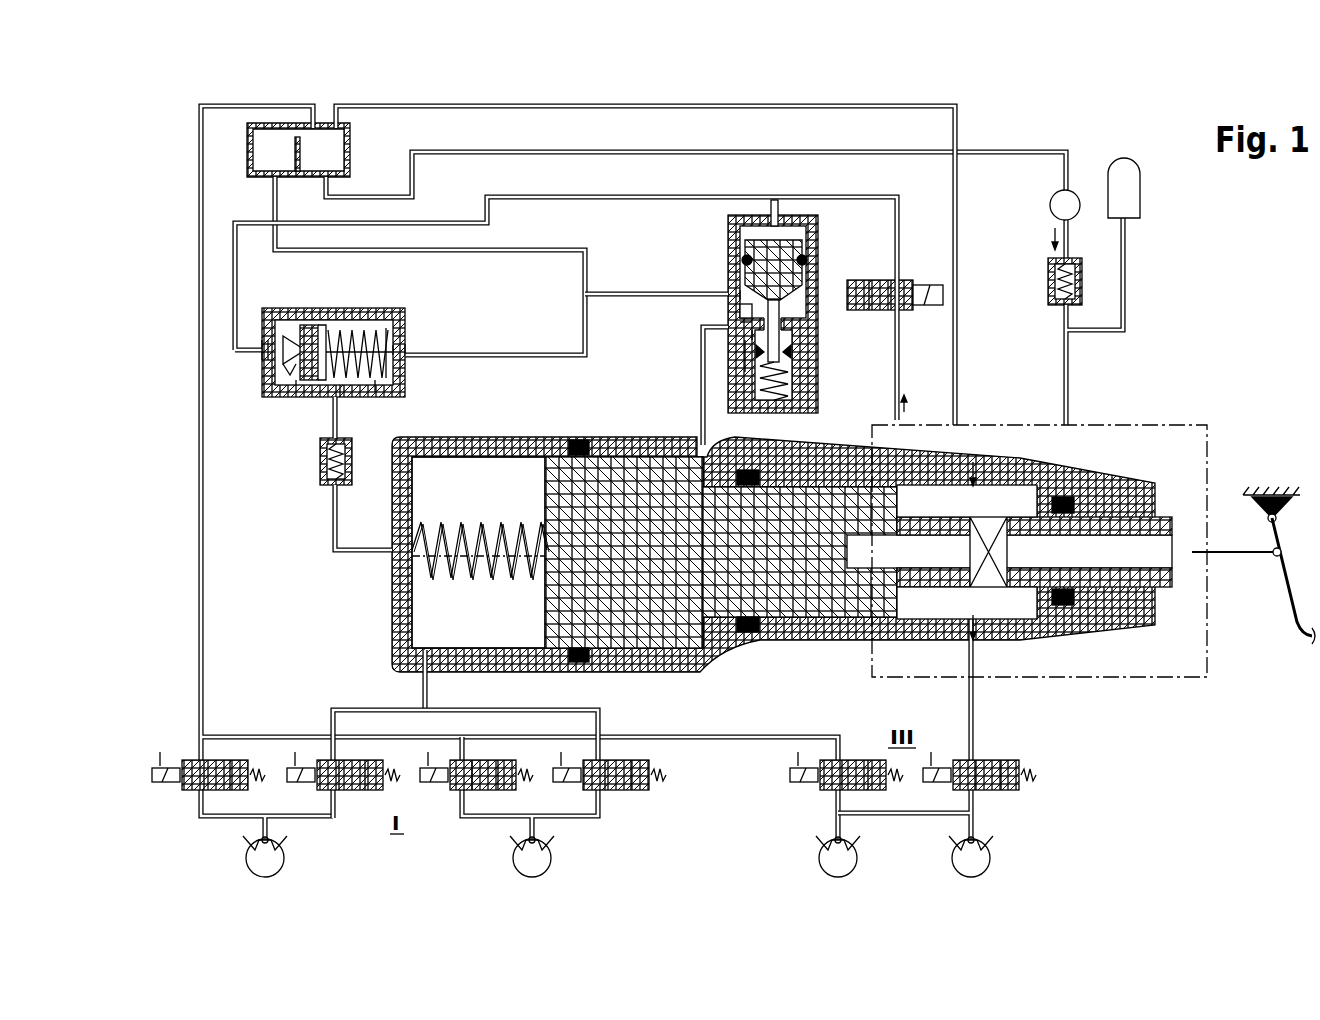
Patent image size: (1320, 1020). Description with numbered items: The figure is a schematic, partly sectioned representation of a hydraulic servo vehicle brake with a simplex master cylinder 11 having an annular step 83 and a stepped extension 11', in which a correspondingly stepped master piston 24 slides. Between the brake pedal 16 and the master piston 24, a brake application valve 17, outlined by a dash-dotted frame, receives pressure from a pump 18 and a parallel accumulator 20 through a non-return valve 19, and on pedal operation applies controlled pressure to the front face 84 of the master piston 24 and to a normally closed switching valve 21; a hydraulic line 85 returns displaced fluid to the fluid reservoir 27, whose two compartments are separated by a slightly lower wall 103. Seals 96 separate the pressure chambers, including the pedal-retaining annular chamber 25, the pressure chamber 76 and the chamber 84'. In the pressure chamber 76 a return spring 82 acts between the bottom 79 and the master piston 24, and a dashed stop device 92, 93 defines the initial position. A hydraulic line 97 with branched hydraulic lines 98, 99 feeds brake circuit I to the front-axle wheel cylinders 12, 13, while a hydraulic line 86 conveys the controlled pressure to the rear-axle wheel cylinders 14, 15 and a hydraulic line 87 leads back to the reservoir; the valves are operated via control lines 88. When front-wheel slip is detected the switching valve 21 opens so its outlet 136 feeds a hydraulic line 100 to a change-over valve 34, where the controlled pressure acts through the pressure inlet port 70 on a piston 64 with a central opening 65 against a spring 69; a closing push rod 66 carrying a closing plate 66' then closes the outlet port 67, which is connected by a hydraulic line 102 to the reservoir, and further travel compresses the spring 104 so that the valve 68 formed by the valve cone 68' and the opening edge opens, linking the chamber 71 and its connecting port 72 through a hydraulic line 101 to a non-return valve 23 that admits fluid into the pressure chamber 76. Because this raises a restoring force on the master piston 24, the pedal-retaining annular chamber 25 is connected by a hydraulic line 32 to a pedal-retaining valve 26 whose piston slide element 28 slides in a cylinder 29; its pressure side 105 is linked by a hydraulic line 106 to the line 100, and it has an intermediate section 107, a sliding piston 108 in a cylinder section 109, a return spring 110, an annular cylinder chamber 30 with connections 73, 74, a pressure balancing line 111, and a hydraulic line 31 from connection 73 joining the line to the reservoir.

The master cylinder 11 is at (773, 532).
The stepped extension of the master cylinder 11' is at (749, 503).
The front-axle wheel cylinder 12 is at (250, 842).
The front-axle wheel cylinder 13 is at (516, 842).
The rear-axle wheel cylinder 14 is at (822, 842).
The rear-axle wheel cylinder 15 is at (955, 842).
The brake pedal 16 is at (1285, 600).
The brake application valve 17 is at (1146, 430).
The pump 18 is at (1050, 205).
The non-return valve 19 is at (1048, 285).
The accumulator 20 is at (1138, 192).
The switching valve 21 is at (880, 281).
The non-return valve 23 is at (320, 470).
The master piston 24 is at (656, 632).
The pedal-retaining annular chamber 25 is at (700, 640).
The pedal-retaining valve 26 is at (728, 232).
The fluid reservoir 27 is at (247, 150).
The piston slide element 28 is at (744, 252).
The cylinder 29 is at (744, 270).
The annular cylinder chamber 30 is at (750, 312).
The hydraulic line 31 is at (604, 292).
The hydraulic line 32 is at (702, 408).
The change-over valve 34 is at (408, 312).
The piston 64 is at (308, 330).
The central opening 65 is at (324, 328).
The closing push rod 66 is at (359, 327).
The closing plate 66' is at (398, 327).
The outlet port 67 is at (406, 350).
The valve 68 is at (257, 362).
The valve cone 68' is at (258, 389).
The spring 69 is at (380, 388).
The pressure inlet port 70 is at (264, 348).
The chamber 71 is at (346, 388).
The connecting port 72 is at (330, 400).
The connection 73 is at (738, 296).
The connection 74 is at (742, 345).
The pressure chamber 76 is at (495, 458).
The bottom 79 is at (400, 602).
The return spring 82 is at (482, 578).
The annular step 83 is at (724, 652).
The front face 84 is at (1009, 508).
The pressure chamber 84' is at (981, 547).
The hydraulic line 85 is at (958, 265).
The hydraulic line 86 is at (976, 730).
The hydraulic line 87 is at (712, 740).
The control lines 88 is at (170, 785).
The stop device 92 is at (450, 536).
The stop device 93 is at (538, 536).
The seals 96 is at (580, 662).
The hydraulic line 97 is at (420, 700).
The branched hydraulic line 98 is at (490, 710).
The branched hydraulic line 99 is at (362, 710).
The hydraulic line 100 is at (454, 224).
The hydraulic line 101 is at (333, 522).
The hydraulic line 102 is at (274, 197).
The wall 103 is at (300, 150).
The spring 104 is at (300, 386).
The pressure side 105 is at (760, 228).
The hydraulic line 106 is at (778, 200).
The intermediate section 107 is at (784, 340).
The sliding piston 108 is at (790, 358).
The cylinder section 109 is at (793, 390).
The return spring 110 is at (745, 384).
The pressure balancing line 111 is at (740, 326).
The outlet 136 is at (900, 285).